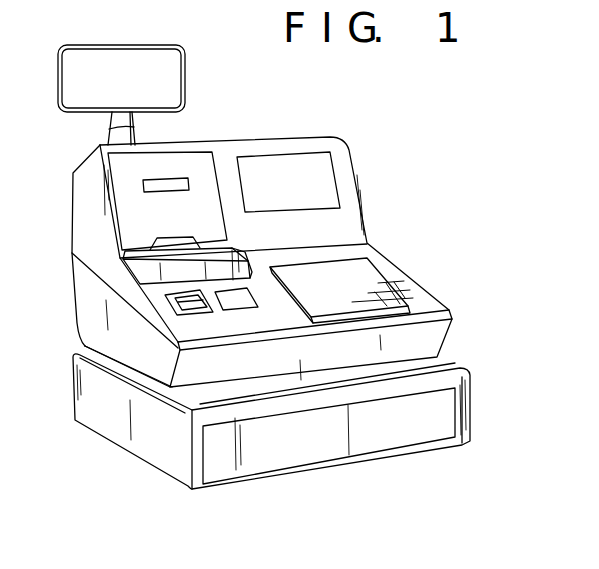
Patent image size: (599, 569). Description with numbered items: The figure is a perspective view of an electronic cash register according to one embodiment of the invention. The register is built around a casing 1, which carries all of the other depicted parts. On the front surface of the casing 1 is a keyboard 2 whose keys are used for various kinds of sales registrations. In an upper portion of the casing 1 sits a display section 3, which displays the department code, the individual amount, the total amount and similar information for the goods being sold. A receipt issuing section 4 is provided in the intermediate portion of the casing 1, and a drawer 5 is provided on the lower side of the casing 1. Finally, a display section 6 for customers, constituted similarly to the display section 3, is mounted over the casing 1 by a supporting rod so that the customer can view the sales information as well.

The casing 1 is at (363, 222).
The keyboard 2 is at (382, 275).
The display section 3 is at (330, 167).
The receipt issuing section 4 is at (148, 292).
The drawer 5 is at (365, 440).
The display section for customers 6 is at (185, 70).